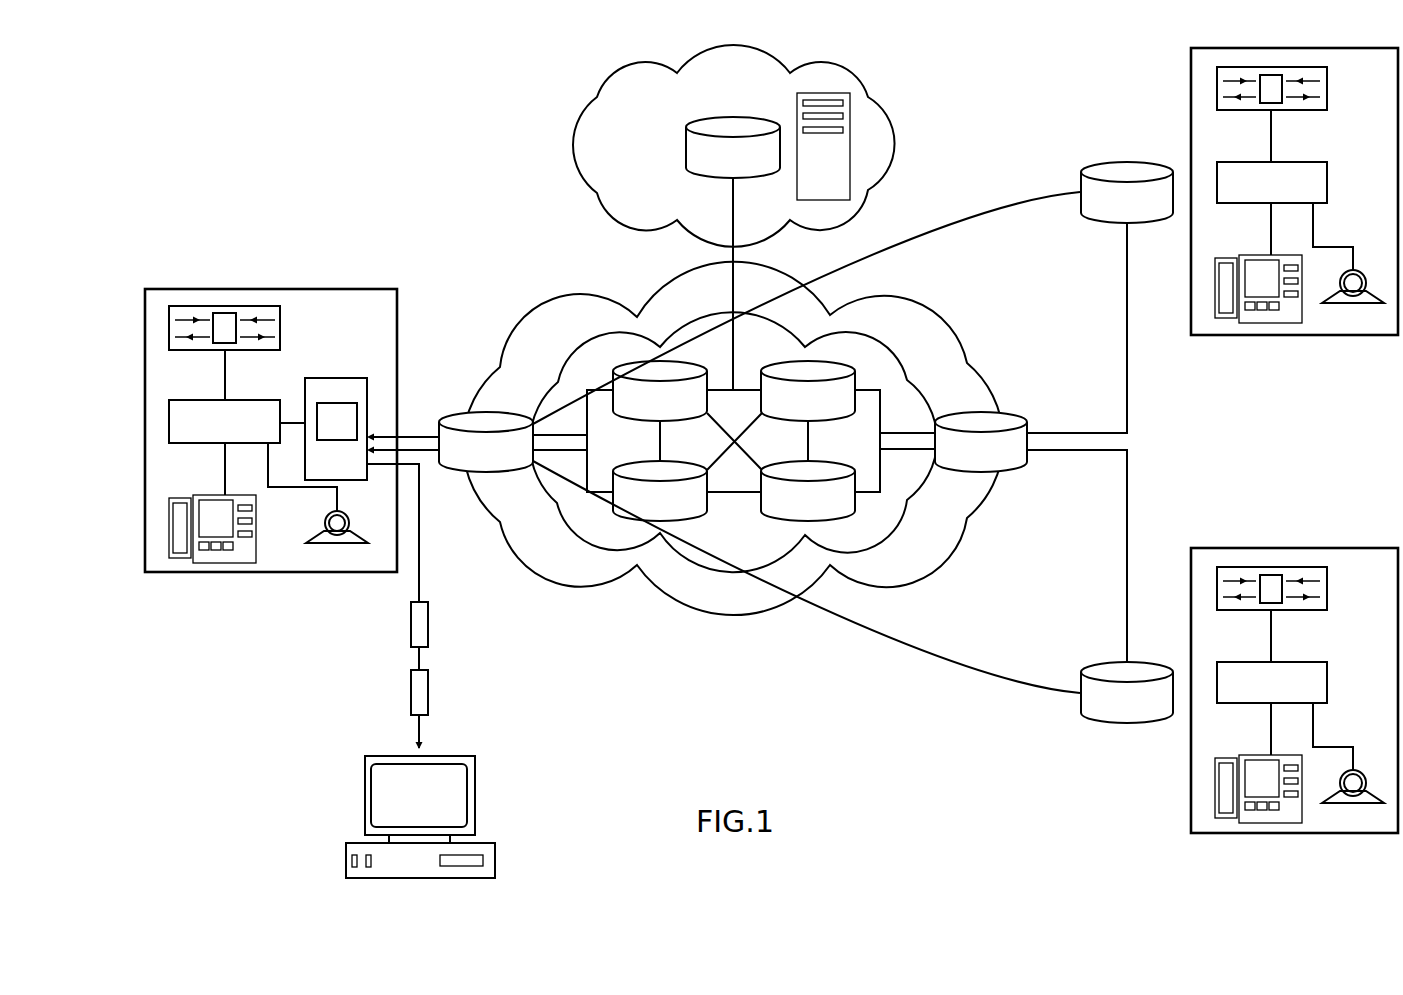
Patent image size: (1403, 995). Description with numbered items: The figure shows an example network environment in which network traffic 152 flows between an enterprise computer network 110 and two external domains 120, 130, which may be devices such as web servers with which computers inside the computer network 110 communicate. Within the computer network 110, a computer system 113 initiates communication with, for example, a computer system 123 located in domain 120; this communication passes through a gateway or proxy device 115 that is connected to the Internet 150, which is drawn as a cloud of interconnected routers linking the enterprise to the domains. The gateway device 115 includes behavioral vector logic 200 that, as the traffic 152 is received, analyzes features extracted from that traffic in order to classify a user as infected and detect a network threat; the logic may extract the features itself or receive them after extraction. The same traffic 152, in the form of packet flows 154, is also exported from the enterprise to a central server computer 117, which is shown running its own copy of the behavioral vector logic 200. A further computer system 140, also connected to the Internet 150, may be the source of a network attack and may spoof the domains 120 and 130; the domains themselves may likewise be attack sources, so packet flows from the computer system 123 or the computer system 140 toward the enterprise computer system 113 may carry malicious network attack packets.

The computer network 110 is at (266, 537).
The computer system 113 is at (213, 436).
The gateway device 115 is at (325, 378).
The behavioral vector logic 200 is at (326, 433).
The central server computer 117 is at (495, 858).
The packet flows 154 is at (428, 625).
The Internet 150 is at (527, 318).
The network traffic 152 is at (852, 265).
The computer system 140 is at (850, 145).
The domain 130 is at (1190, 82).
The domain 120 is at (1271, 679).
The computer system 123 is at (1259, 694).